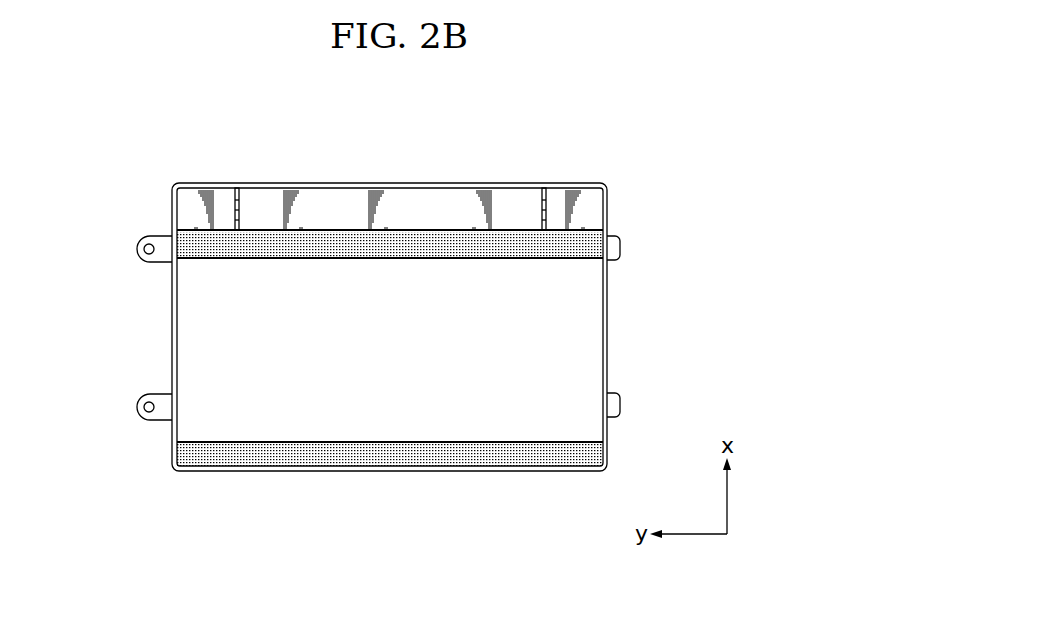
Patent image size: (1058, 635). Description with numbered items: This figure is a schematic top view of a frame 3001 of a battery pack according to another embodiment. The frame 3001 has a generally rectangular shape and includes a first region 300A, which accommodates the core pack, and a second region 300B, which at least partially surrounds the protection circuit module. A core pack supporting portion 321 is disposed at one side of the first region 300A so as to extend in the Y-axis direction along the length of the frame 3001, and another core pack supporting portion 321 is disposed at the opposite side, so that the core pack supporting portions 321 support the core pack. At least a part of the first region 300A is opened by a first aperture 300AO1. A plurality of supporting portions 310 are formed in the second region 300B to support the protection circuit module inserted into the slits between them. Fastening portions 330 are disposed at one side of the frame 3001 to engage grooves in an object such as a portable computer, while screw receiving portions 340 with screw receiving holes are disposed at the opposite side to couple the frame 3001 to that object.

The frame 3001 is at (584, 152).
The second region 300B is at (446, 204).
The supporting portions 310 is at (240, 194).
The core pack supporting portion 321 is at (548, 252).
The first aperture 300AO1 is at (543, 340).
The first region 300A is at (403, 430).
The screw receiving portions 340 is at (145, 237).
The fastening portions 330 is at (618, 243).